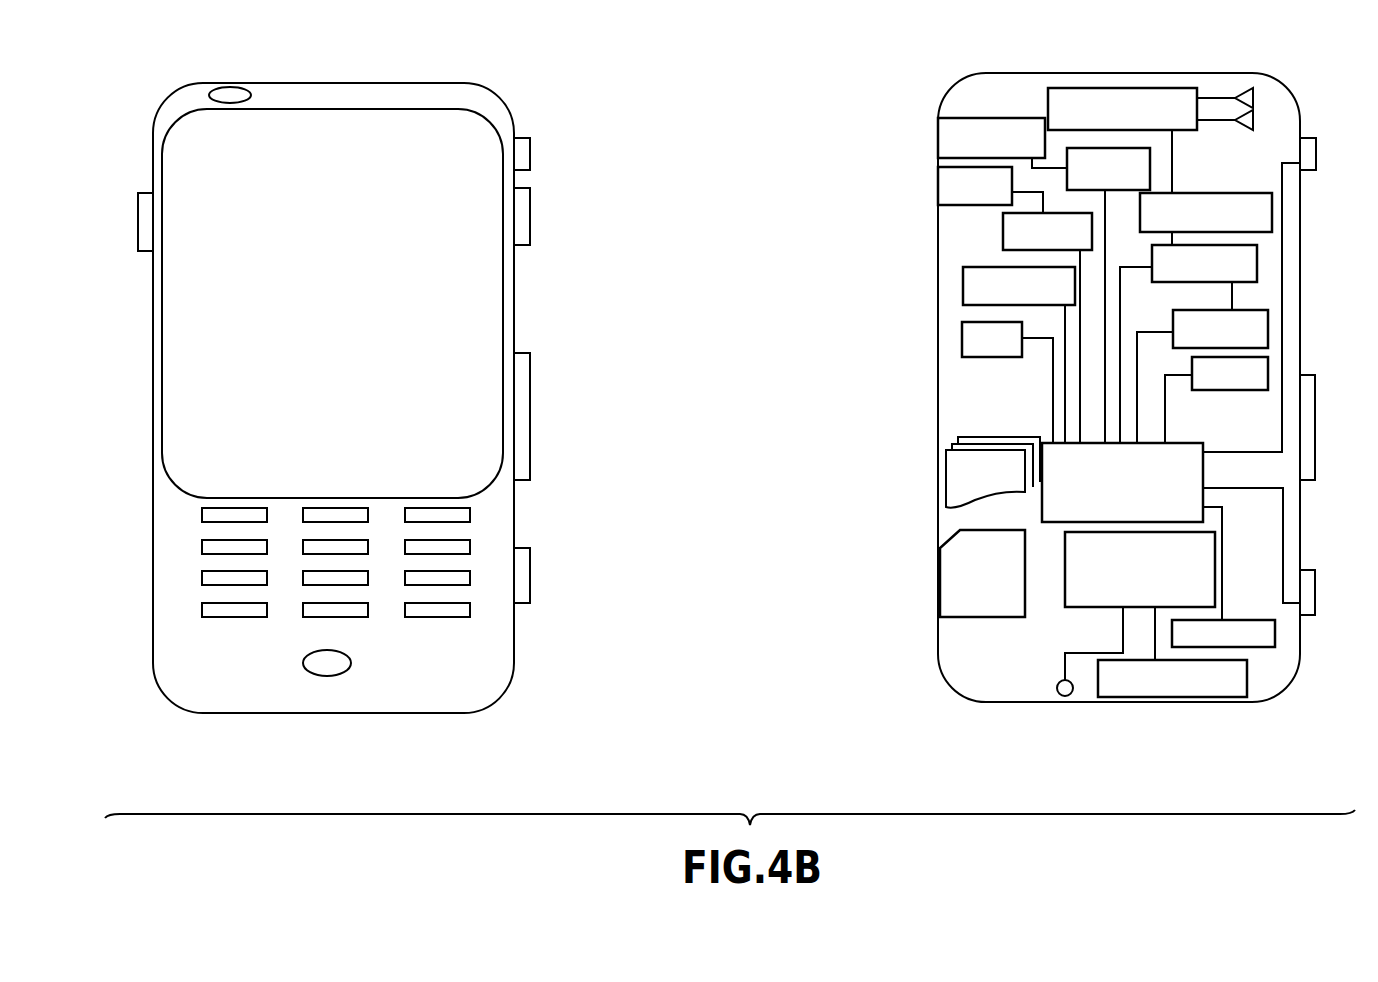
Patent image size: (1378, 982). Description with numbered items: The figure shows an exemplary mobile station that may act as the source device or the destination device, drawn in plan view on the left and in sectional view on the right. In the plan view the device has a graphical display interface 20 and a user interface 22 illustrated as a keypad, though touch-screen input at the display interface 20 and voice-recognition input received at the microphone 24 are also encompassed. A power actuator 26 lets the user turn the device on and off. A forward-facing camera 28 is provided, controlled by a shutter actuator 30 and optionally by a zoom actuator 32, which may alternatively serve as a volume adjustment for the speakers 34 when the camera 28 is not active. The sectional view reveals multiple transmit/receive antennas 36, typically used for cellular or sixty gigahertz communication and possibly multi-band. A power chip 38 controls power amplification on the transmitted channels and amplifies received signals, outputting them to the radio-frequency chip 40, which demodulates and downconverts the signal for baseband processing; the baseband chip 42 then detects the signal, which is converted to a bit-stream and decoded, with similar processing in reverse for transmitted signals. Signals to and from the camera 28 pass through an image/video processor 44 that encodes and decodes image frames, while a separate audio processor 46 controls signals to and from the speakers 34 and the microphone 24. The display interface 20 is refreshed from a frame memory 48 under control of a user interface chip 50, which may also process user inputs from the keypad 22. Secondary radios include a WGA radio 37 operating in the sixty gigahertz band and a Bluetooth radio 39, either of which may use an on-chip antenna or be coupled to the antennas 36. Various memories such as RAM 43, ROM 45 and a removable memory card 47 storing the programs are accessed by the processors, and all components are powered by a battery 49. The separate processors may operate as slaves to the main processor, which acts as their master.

The graphical display interface 20 is at (190, 322).
The user interface 22 is at (190, 627).
The microphone 24 is at (332, 668).
The power actuator 26 is at (523, 150).
The camera 28 is at (236, 90).
The shutter actuator 30 is at (522, 568).
The zoom actuator 32 is at (522, 398).
The speaker 34 is at (140, 195).
The transmit/receive antennas 36 is at (1247, 90).
The WGA radio 37 is at (963, 292).
The power chip 38 is at (1113, 90).
The Bluetooth radio 39 is at (962, 341).
The radio-frequency (RF) chip 40 is at (1262, 222).
The baseband (BB) chip 42 is at (1250, 272).
The random access memory RAM 43 is at (1263, 335).
The image/video processor 44 is at (1148, 178).
The read only memory ROM 45 is at (1263, 375).
The audio processor 46 is at (1003, 238).
The memory card 47 is at (948, 555).
The frame memory 48 is at (1170, 697).
The battery 49 is at (1270, 640).
The user interface chip 50 is at (1092, 597).